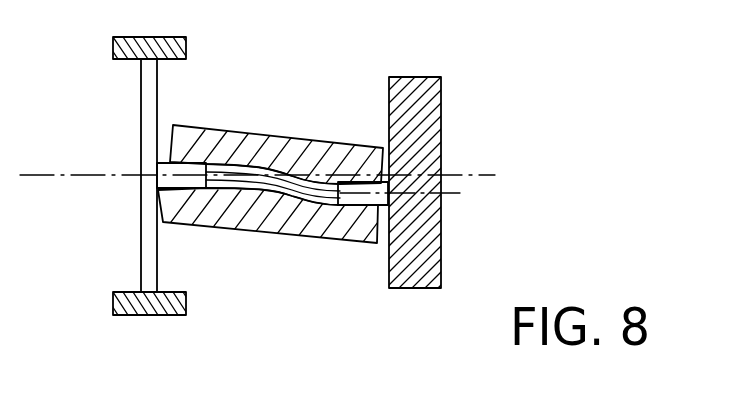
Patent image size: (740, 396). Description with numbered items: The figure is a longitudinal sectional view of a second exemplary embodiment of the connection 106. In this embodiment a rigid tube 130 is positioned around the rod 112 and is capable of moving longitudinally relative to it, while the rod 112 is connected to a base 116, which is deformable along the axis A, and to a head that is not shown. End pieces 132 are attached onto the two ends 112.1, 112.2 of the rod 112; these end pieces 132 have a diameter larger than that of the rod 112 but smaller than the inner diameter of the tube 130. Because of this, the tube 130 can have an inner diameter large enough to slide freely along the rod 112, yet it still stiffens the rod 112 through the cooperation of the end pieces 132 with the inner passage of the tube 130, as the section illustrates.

The connection 106 is at (314, 62).
The base 116 is at (141, 119).
The rod 112 is at (300, 213).
The first end of the rod 112.1 is at (157, 167).
The second end of the rod 112.2 is at (392, 194).
The rigid tube 130 is at (214, 212).
The end pieces 132 is at (167, 206).